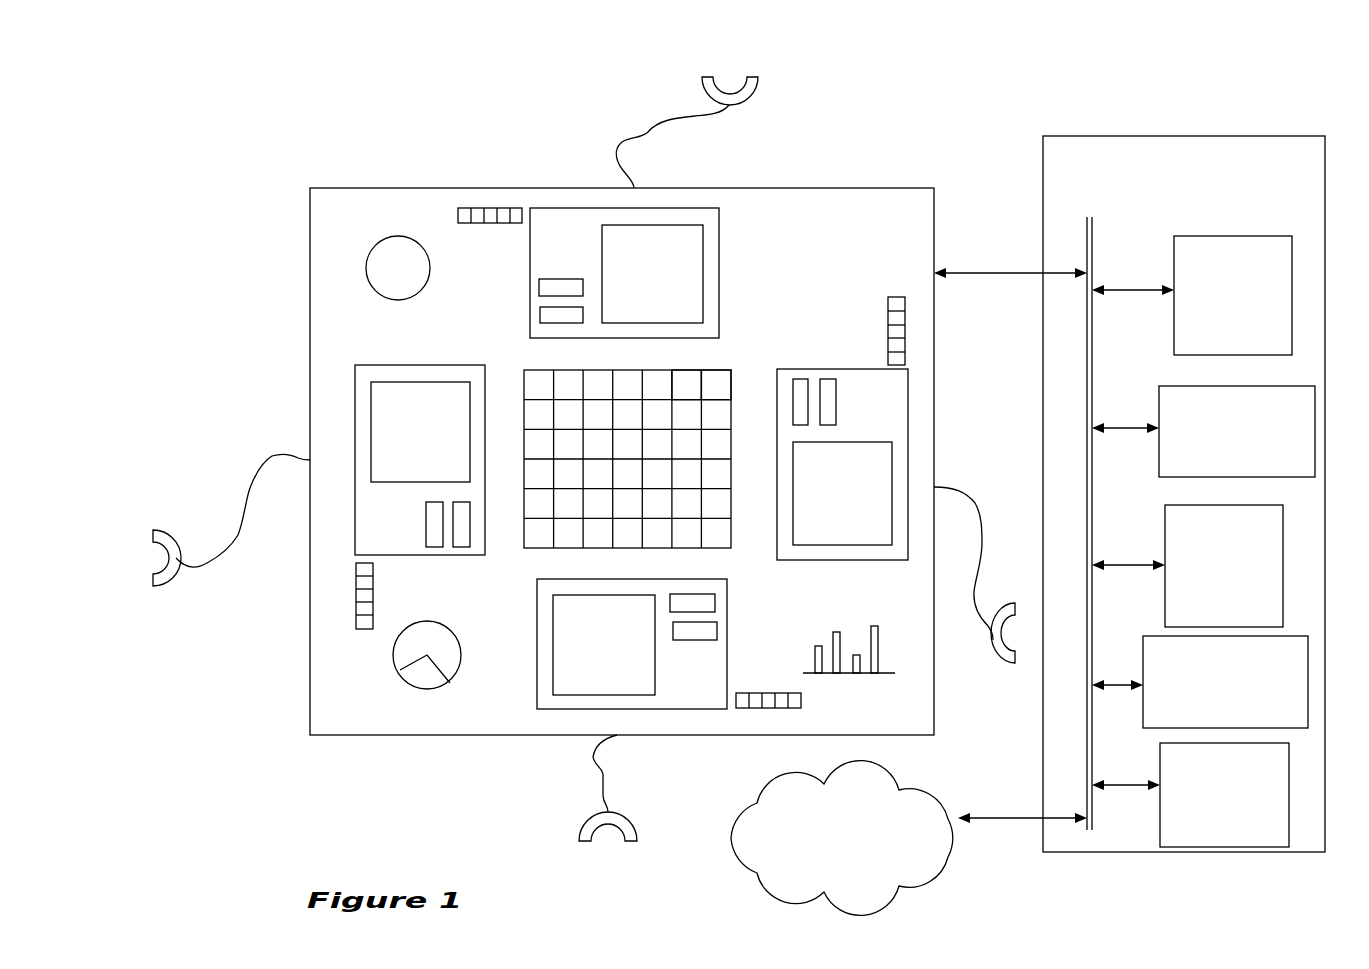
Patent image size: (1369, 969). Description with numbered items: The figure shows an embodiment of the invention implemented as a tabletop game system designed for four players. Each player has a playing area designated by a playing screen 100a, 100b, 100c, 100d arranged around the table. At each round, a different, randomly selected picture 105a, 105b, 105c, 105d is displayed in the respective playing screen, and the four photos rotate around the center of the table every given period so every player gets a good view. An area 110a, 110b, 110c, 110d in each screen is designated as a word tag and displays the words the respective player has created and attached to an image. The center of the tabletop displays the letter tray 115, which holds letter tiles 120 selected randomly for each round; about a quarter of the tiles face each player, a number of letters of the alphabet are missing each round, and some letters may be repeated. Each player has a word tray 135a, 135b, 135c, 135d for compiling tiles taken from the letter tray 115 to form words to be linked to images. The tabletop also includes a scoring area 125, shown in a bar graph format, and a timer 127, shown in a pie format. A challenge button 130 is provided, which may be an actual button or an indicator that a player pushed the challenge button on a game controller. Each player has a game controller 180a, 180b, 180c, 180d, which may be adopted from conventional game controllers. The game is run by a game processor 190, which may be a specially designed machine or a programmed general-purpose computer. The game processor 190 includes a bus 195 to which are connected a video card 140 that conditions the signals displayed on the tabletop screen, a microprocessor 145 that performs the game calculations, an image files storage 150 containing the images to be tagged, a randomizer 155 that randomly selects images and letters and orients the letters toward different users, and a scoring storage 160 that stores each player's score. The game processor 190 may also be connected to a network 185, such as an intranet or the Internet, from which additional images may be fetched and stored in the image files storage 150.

The playing screen 100a is at (623, 644).
The playing screen 100b is at (363, 441).
The playing screen 100c is at (634, 273).
The playing screen 100d is at (893, 443).
The picture 105a is at (578, 655).
The picture 105b is at (394, 442).
The picture 105c is at (626, 286).
The picture 105d is at (816, 504).
The word tag area 110a is at (704, 627).
The word tag area 110b is at (426, 520).
The word tag area 110c is at (541, 290).
The word tag area 110d is at (798, 379).
The letter tray 115 is at (526, 363).
The letter tiles 120 is at (685, 370).
The scoring area 125 is at (820, 640).
The timer 127 is at (440, 665).
The challenge button 130 is at (378, 279).
The word tray 135a is at (767, 709).
The word tray 135b is at (356, 615).
The word tray 135c is at (488, 208).
The word tray 135d is at (893, 297).
The video card 140 is at (1213, 342).
The microprocessor 145 is at (1217, 462).
The image files storage 150 is at (1204, 611).
The randomizer 155 is at (1206, 709).
The scoring storage 160 is at (1205, 839).
The game controller 180a is at (595, 820).
The game controller 180b is at (155, 530).
The game controller 180c is at (755, 76).
The game controller 180d is at (1012, 663).
The network 185 is at (822, 867).
The game processor 190 is at (1172, 216).
The bus 195 is at (1088, 757).